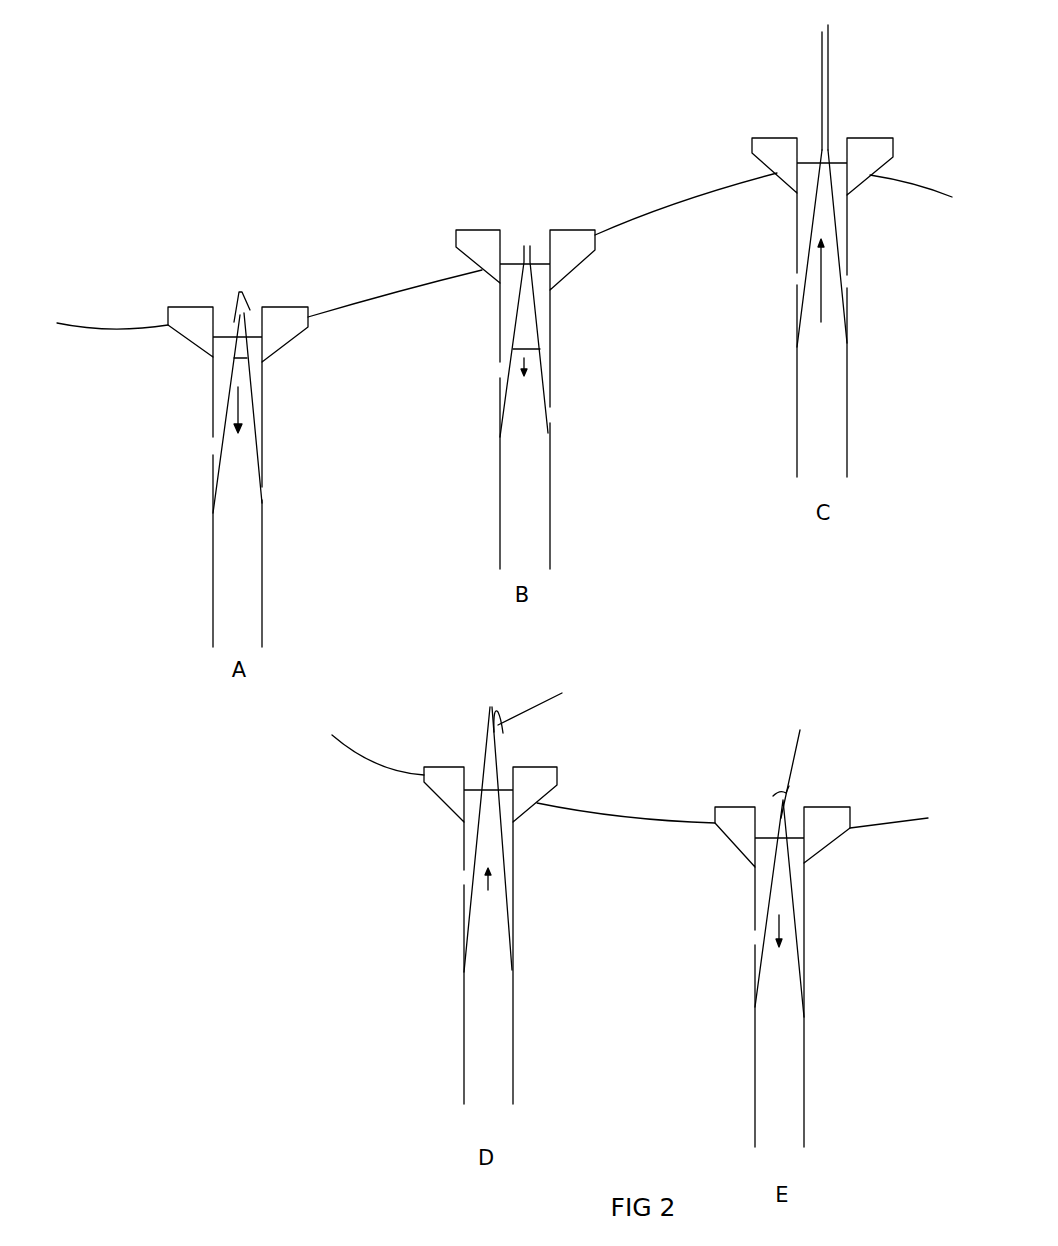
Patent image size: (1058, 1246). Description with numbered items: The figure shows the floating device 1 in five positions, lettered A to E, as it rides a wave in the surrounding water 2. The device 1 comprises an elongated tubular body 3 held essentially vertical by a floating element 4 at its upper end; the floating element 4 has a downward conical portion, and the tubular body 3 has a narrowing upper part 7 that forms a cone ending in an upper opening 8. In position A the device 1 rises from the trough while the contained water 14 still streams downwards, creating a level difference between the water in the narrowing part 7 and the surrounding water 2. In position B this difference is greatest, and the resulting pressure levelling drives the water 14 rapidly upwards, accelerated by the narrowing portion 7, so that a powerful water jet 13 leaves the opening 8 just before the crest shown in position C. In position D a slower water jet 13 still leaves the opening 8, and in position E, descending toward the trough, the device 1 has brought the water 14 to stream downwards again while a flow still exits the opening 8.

The floating device 1 is at (525, 581).
The water 2 is at (397, 308).
The tubular body 3 is at (228, 483).
The floating element 4 is at (192, 327).
The upper part 7 is at (252, 417).
The upper opening 8 is at (242, 317).
The water jet 13 is at (828, 75).
The contained water 14 is at (237, 503).